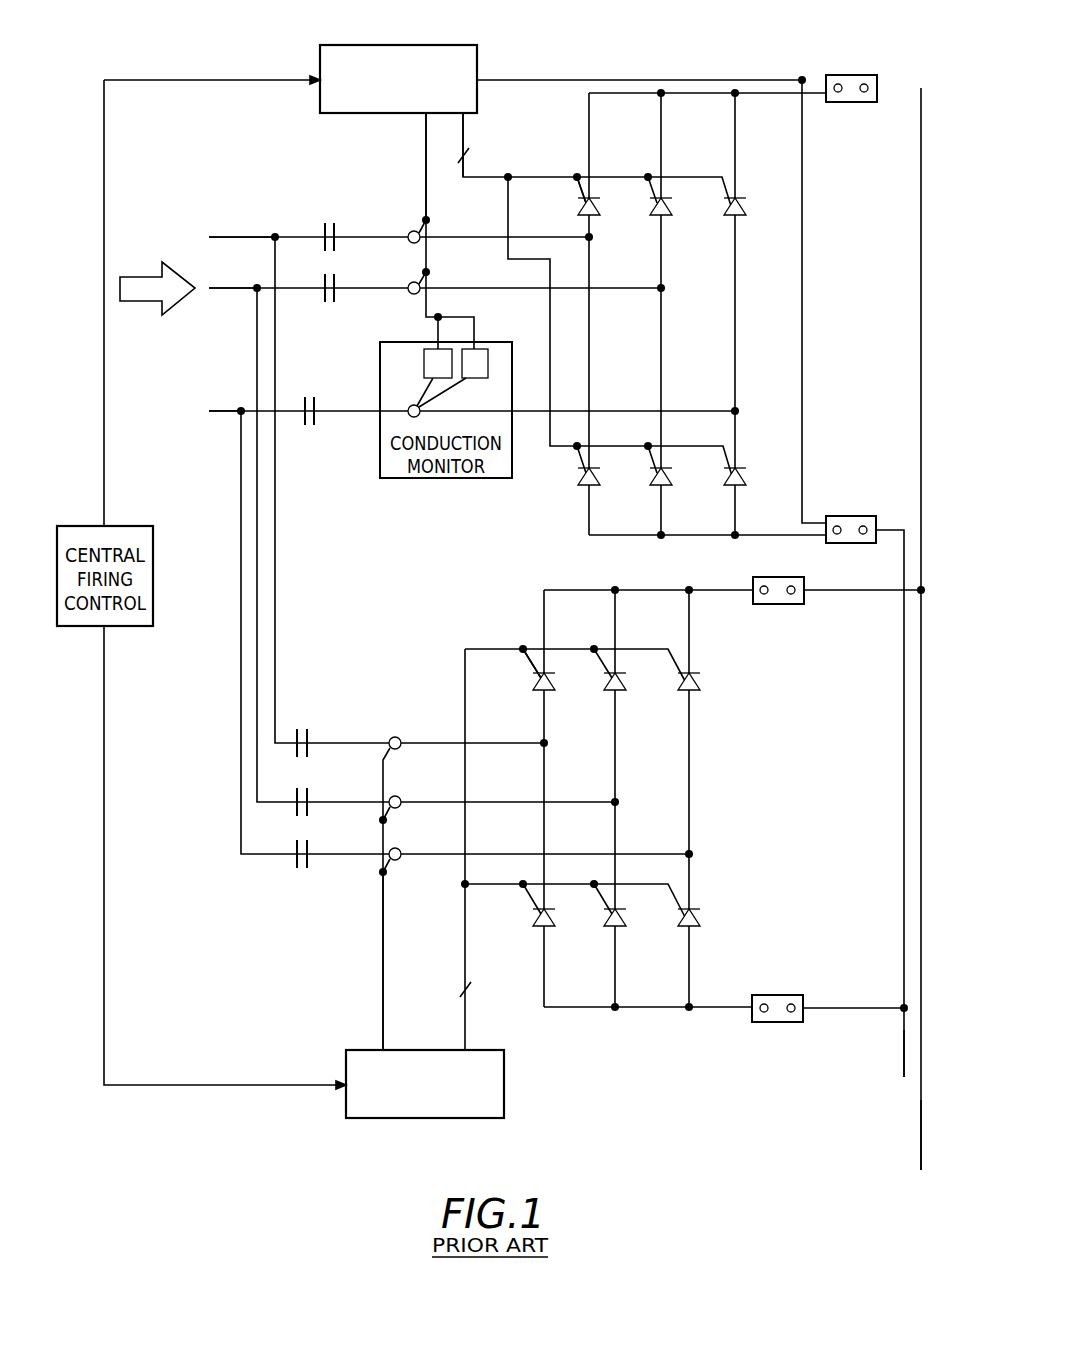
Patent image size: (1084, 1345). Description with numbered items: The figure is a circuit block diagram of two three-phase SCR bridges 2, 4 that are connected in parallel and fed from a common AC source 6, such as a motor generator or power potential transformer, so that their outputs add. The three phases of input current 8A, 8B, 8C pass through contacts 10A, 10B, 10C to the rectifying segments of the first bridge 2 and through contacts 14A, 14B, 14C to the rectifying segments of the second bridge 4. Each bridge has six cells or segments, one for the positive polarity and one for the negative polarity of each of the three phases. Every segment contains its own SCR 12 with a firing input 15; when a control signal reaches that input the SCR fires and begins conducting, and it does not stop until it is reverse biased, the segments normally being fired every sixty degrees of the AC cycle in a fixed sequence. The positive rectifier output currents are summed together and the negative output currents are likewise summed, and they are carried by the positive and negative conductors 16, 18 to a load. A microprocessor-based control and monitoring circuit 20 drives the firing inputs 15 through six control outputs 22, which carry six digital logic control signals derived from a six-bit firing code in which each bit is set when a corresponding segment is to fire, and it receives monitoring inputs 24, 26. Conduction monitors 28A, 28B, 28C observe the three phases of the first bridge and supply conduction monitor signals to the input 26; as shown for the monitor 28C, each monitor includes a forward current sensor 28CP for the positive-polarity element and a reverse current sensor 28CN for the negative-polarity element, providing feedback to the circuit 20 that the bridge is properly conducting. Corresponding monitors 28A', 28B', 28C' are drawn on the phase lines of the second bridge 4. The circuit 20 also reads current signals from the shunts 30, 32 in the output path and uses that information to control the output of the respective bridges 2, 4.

The controlled rectifier bridge 2 is at (865, 306).
The controlled rectifier bridge 4 is at (806, 801).
The common AC source 6 is at (140, 276).
The phase A input current 8A is at (218, 237).
The phase B input current 8B is at (218, 290).
The phase C input current 8C is at (218, 413).
The contact 10A is at (328, 222).
The contact 10B is at (336, 282).
The contact 10C is at (308, 426).
The SCR 12 is at (600, 207).
The contact 14A is at (302, 728).
The contact 14B is at (302, 787).
The contact 14C is at (302, 839).
The firing input 15 is at (578, 190).
The positive conductor 16 is at (920, 1132).
The negative conductor 18 is at (904, 1048).
The control and monitoring circuit 20 is at (392, 45).
The control output 22 is at (466, 118).
The monitoring input 24 is at (480, 76).
The monitoring input 26 is at (420, 118).
The conduction monitor 28A is at (392, 220).
The conduction monitor 28B is at (391, 304).
The conduction monitor 28C is at (375, 394).
The forward current sensor 28CP is at (424, 366).
The reverse current sensor 28CN is at (488, 360).
The phase A conduction sensor of second section 28A' is at (423, 727).
The phase B conduction sensor of second section 28B' is at (423, 786).
The phase C conduction sensor of second section 28C' is at (423, 838).
The shunt 30 is at (858, 75).
The shunt 32 is at (864, 516).